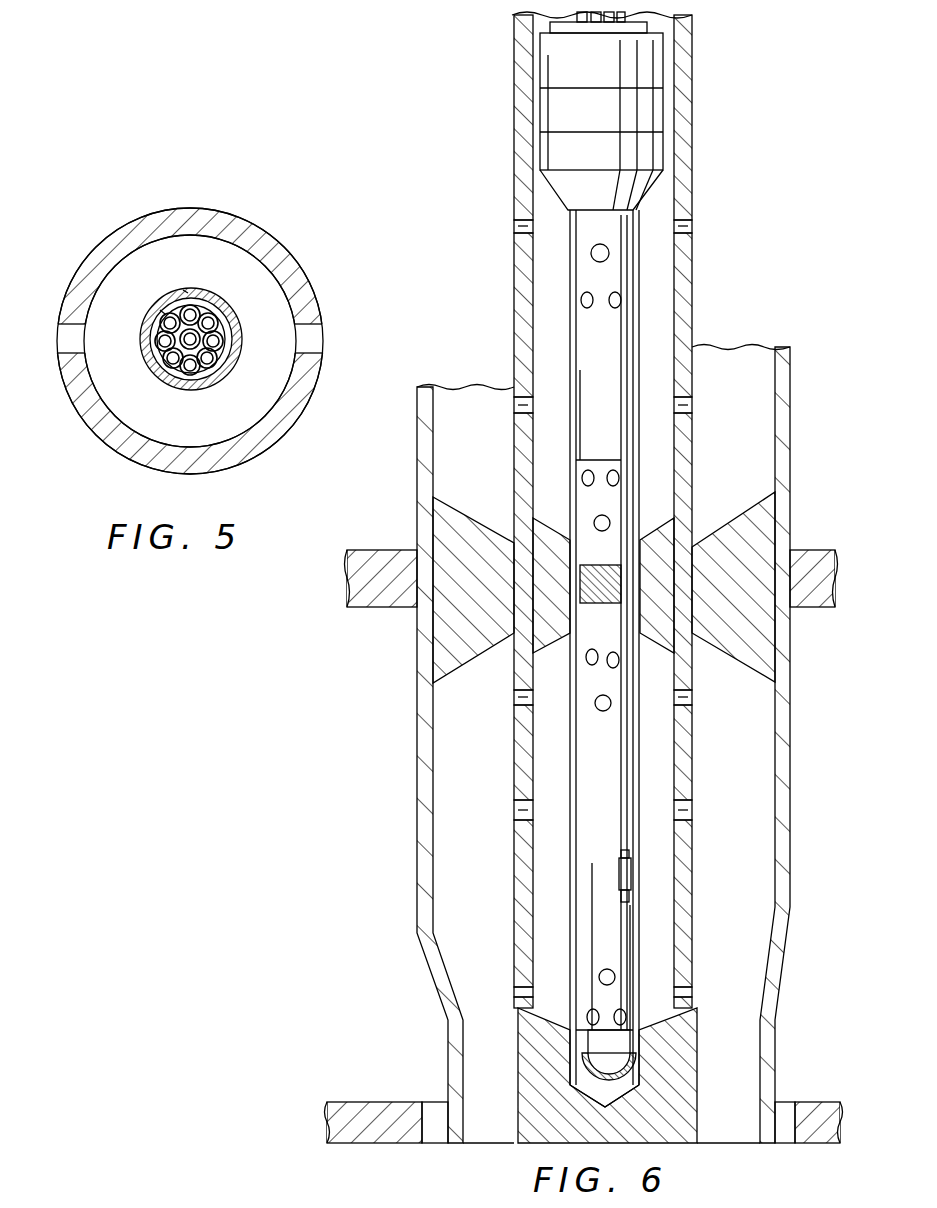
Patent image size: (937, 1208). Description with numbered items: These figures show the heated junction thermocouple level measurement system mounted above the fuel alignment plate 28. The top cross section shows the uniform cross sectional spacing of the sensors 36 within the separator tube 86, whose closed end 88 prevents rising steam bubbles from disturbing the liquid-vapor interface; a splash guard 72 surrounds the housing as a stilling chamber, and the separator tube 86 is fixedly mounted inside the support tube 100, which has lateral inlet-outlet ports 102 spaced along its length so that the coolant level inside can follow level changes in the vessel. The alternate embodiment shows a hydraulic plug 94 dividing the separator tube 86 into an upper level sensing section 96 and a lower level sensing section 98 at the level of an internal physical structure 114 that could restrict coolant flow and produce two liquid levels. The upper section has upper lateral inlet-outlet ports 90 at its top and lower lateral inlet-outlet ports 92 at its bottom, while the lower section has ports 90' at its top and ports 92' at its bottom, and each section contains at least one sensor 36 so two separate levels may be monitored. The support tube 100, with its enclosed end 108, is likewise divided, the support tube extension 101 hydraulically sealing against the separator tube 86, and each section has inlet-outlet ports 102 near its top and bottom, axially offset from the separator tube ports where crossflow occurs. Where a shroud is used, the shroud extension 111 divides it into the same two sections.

In FIG. 6, the fuel alignment plate 28 is at (418, 1102).
In FIG. 5, the sensor 36 is at (212, 316).
In FIG. 6, the sensor 36 is at (633, 873).
In FIG. 5, the splash guard 72 is at (232, 325).
In FIG. 5, the separator tube 86 is at (203, 389).
In FIG. 6, the separator tube 86 is at (640, 500).
In FIG. 5, the end 88 is at (186, 375).
In FIG. 6, the end 88 is at (638, 1058).
In FIG. 5, the upper lateral inlet-outlet ports 90 is at (205, 274).
In FIG. 6, the upper lateral inlet-outlet ports 90 is at (624, 276).
In FIG. 6, the lateral inlet-outlet ports 90' is at (548, 680).
In FIG. 5, the lower lateral inlet-outlet ports 92 is at (138, 294).
In FIG. 6, the lower lateral inlet-outlet ports 92 is at (577, 500).
In FIG. 6, the lower inlet-outlet ports 92' is at (670, 966).
In FIG. 6, the hydraulic plug 94 is at (632, 545).
In FIG. 6, the upper level sensing section 96 is at (622, 462).
In FIG. 6, the lower level sensing section 98 is at (633, 950).
In FIG. 5, the support tube 100 is at (283, 428).
In FIG. 6, the support tube 100 is at (693, 368).
In FIG. 6, the support tube extension 101 is at (670, 623).
In FIG. 5, the lateral inlet-outlet ports 102 is at (80, 345).
In FIG. 6, the lateral inlet-outlet ports 102 is at (514, 227).
In FIG. 6, the end 108 is at (690, 1065).
In FIG. 6, the shroud extension 111 is at (780, 541).
In FIG. 6, the internal physical structure 114 is at (397, 608).